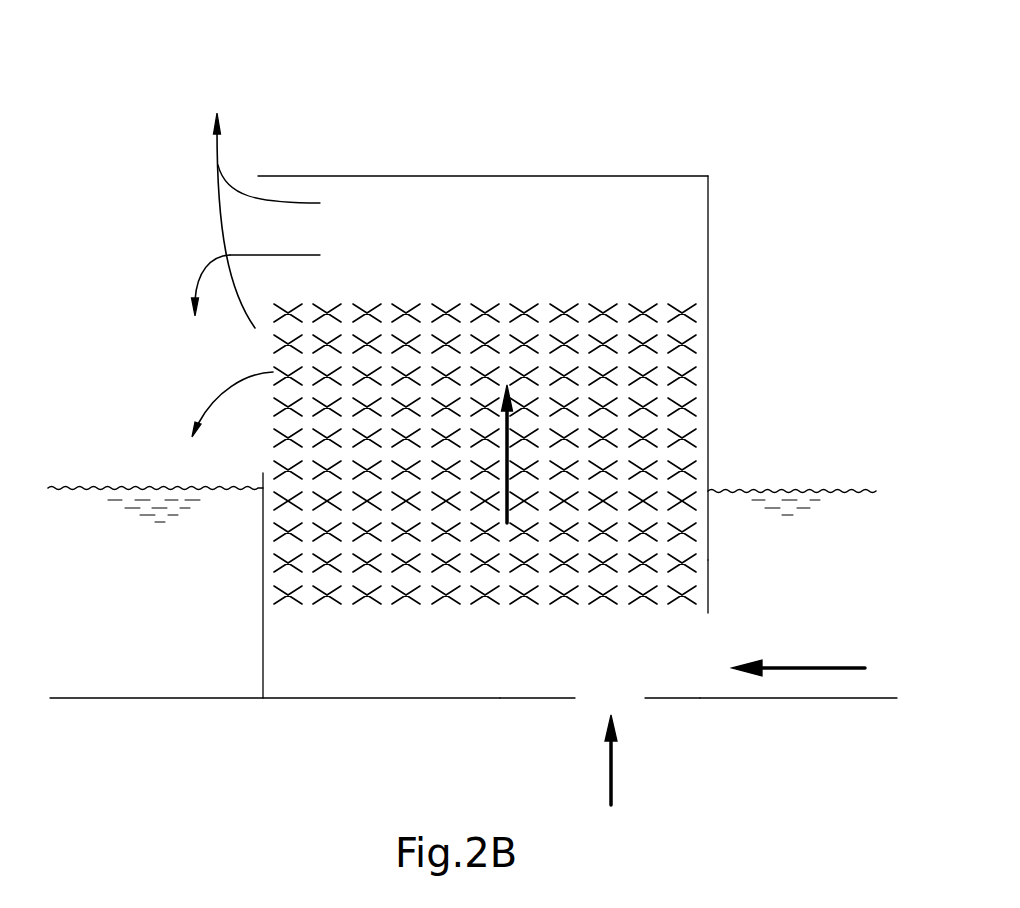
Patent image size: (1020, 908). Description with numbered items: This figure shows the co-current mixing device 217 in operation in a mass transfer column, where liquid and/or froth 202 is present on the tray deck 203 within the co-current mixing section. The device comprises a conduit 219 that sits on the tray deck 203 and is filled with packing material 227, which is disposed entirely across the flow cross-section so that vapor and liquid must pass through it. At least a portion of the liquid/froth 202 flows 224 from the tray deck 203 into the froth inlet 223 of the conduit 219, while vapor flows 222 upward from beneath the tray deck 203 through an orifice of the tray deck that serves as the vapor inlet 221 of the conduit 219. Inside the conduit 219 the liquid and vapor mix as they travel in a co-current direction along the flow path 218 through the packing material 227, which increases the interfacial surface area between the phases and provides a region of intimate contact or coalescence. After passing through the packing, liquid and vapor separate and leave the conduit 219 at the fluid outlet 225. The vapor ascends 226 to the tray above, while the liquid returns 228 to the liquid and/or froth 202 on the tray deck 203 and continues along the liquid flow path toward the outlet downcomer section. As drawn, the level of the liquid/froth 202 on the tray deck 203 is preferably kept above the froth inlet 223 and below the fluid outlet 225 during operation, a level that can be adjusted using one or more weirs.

The co-current mixing device 217 is at (753, 100).
The conduit 219 is at (580, 176).
The packing material 227 is at (610, 342).
The co-current flow path 218 is at (508, 455).
The liquid and/or froth 202 is at (817, 490).
The froth inlet 223 is at (713, 640).
The liquid/froth flow 224 is at (822, 665).
The tray deck 203 is at (815, 698).
The vapor inlet 221 is at (602, 694).
The vapor flow 222 is at (613, 775).
The fluid outlet 225 is at (160, 238).
The vapor ascent 226 is at (218, 162).
The liquid return 228 is at (195, 280).